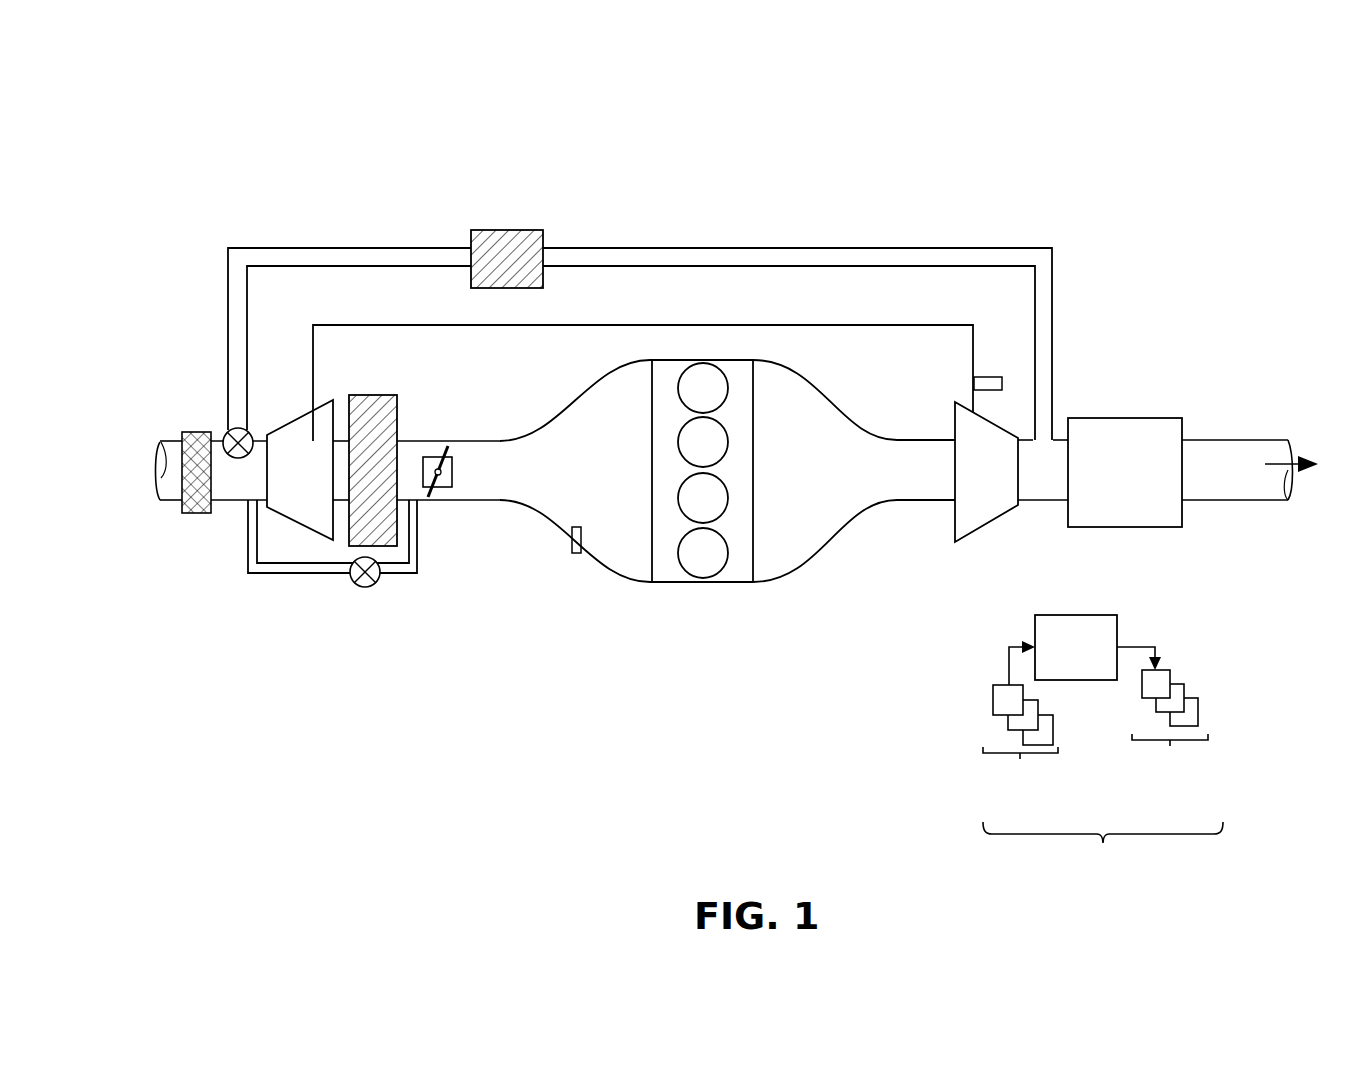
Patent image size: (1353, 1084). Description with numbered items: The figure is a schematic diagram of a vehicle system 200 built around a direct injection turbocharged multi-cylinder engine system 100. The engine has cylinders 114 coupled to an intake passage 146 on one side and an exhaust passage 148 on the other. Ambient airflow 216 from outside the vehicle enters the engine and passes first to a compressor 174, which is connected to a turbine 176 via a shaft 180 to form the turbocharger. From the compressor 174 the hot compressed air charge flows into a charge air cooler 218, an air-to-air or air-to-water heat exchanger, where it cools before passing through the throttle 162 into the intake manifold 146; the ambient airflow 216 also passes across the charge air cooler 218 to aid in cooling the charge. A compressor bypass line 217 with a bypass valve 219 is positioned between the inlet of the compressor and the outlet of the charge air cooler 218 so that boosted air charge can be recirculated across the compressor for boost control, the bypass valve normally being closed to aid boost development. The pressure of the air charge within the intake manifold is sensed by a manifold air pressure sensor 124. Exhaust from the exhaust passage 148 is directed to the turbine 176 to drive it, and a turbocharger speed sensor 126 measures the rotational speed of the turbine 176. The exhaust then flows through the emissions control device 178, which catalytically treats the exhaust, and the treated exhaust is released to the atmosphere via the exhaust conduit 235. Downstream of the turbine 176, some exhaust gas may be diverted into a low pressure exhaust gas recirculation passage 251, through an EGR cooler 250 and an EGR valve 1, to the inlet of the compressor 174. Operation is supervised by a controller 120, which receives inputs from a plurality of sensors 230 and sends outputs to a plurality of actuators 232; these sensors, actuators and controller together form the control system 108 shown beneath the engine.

The EGR valve 1 is at (228, 430).
The engine system 100 is at (548, 408).
The control system 108 is at (1103, 849).
The cylinders 114 is at (712, 573).
The controller 120 is at (1094, 657).
The manifold air pressure sensor 124 is at (570, 536).
The turbocharger speed sensor 126 is at (980, 376).
The intake passage 146 is at (612, 481).
The exhaust passage 148 is at (867, 481).
The throttle 162 is at (455, 476).
The compressor 174 is at (318, 481).
The turbine 176 is at (1006, 481).
The emissions control device 178 is at (1102, 418).
The shaft 180 is at (868, 327).
The vehicle system 200 is at (1275, 100).
The ambient airflow 216 is at (133, 472).
The compressor bypass line 217 is at (419, 574).
The charge air cooler 218 is at (384, 395).
The bypass valve 219 is at (372, 588).
The sensors 230 is at (1025, 725).
The actuators 232 is at (1172, 718).
The exhaust conduit 235 is at (1266, 440).
The EGR cooler 250 is at (513, 230).
The EGR passage 251 is at (1018, 254).